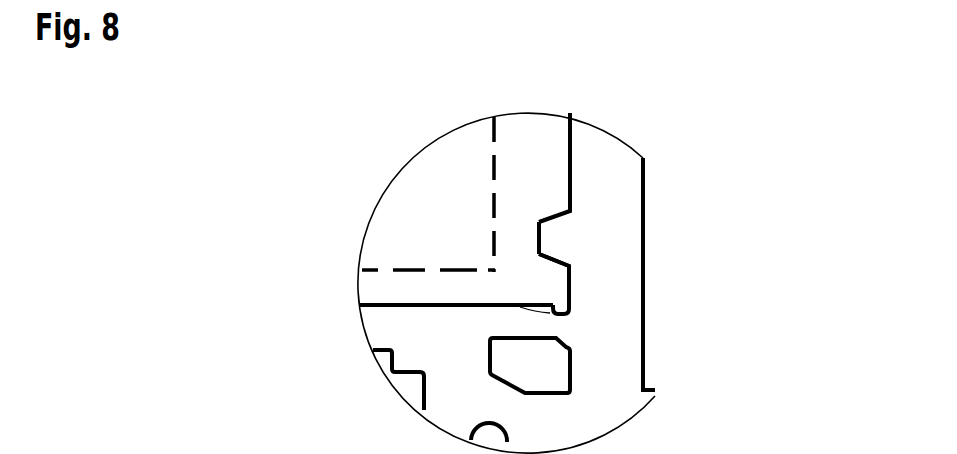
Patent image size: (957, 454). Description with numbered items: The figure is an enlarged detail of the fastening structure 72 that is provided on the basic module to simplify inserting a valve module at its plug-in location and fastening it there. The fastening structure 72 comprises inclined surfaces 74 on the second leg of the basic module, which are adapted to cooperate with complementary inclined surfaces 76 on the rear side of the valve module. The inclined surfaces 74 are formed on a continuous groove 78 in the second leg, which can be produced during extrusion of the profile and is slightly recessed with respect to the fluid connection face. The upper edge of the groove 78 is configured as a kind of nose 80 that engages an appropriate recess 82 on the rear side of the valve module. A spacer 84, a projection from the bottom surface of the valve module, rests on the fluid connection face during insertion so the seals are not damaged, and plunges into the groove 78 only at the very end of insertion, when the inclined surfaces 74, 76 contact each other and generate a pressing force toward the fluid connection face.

The fastening structure 72 is at (800, 178).
The inclined surfaces 74 is at (556, 258).
The inclined surfaces 76 is at (554, 281).
The groove 78 is at (570, 293).
The nose 80 is at (553, 238).
The recess 82 is at (540, 238).
The spacer 84 is at (573, 308).